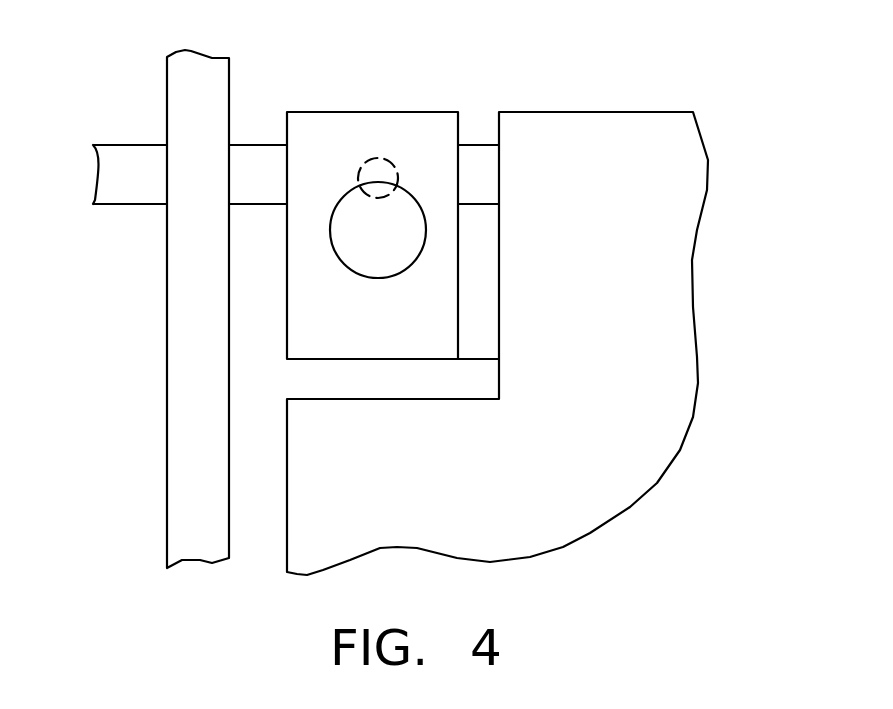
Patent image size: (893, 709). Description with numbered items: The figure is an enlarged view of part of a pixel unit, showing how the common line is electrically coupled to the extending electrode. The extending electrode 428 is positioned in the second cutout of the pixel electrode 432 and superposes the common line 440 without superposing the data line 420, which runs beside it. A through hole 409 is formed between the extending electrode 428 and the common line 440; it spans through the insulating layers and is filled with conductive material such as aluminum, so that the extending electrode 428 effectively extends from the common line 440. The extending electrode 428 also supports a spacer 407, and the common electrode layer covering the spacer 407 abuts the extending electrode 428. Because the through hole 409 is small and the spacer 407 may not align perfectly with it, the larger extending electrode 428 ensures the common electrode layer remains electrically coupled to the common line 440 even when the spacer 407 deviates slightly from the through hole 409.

The data line 420 is at (166, 91).
The common line 440 is at (119, 188).
The extending electrode 428 is at (312, 112).
The pixel electrode 432 is at (640, 352).
The spacer 407 is at (387, 232).
The through hole 409 is at (383, 158).